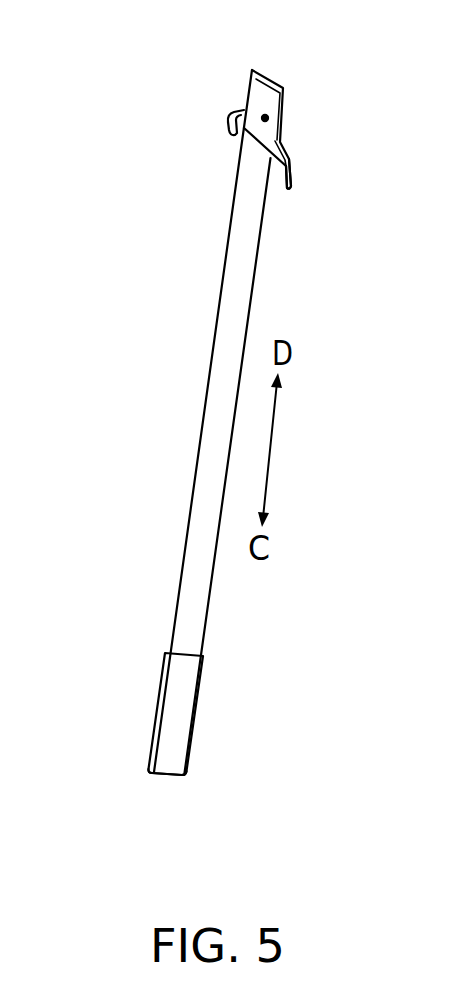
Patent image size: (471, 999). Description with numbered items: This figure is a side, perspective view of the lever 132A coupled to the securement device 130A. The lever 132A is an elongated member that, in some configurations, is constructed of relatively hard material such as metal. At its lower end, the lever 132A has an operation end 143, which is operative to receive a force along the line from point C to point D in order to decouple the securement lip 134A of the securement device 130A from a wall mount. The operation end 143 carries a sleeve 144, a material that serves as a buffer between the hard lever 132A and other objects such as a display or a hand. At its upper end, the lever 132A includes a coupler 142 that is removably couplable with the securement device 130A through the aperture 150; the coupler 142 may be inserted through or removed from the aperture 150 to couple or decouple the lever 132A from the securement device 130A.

The securement device 130A is at (257, 75).
The lever 132A is at (205, 437).
The securement lip 134A is at (293, 168).
The coupler 142 is at (227, 115).
The operation end 143 is at (136, 703).
The sleeve 144 is at (177, 757).
The aperture 150 is at (236, 95).